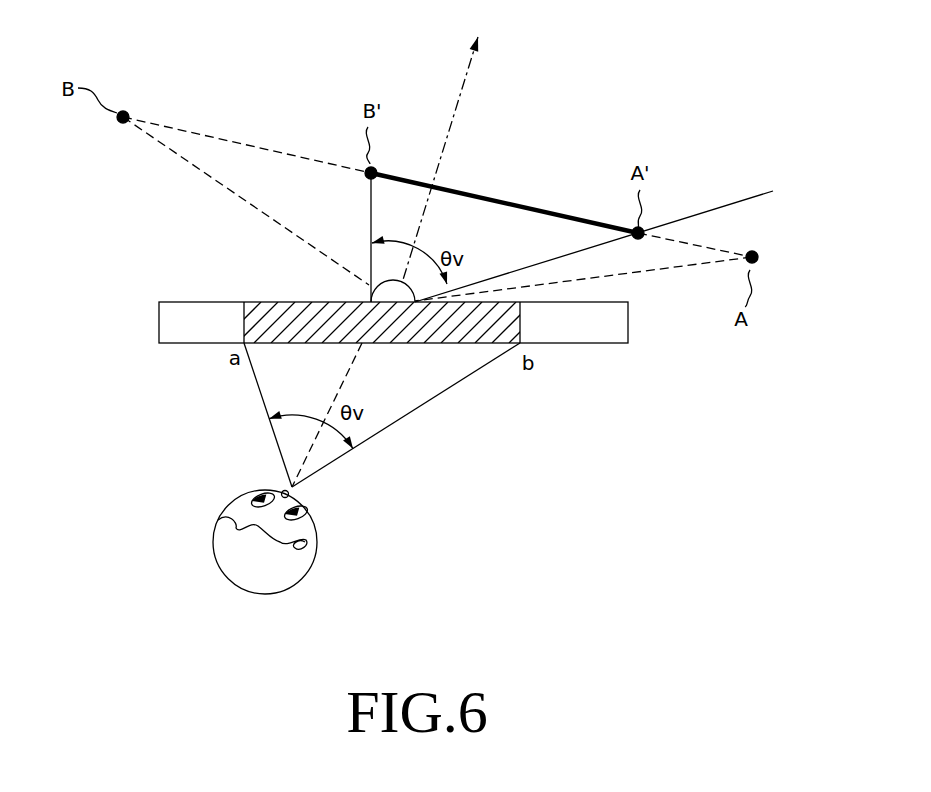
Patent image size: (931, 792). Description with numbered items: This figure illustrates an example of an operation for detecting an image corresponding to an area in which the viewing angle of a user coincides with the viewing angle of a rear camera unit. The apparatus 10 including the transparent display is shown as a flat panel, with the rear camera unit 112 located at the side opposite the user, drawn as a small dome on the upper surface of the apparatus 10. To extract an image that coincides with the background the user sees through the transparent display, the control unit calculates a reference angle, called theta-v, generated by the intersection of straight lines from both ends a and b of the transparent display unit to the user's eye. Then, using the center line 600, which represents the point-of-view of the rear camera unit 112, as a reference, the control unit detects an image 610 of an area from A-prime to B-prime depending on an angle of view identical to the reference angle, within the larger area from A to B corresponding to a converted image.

The apparatus 10 is at (622, 323).
The rear camera unit 112 is at (383, 282).
The center line 600 is at (468, 73).
The image 610 is at (535, 203).